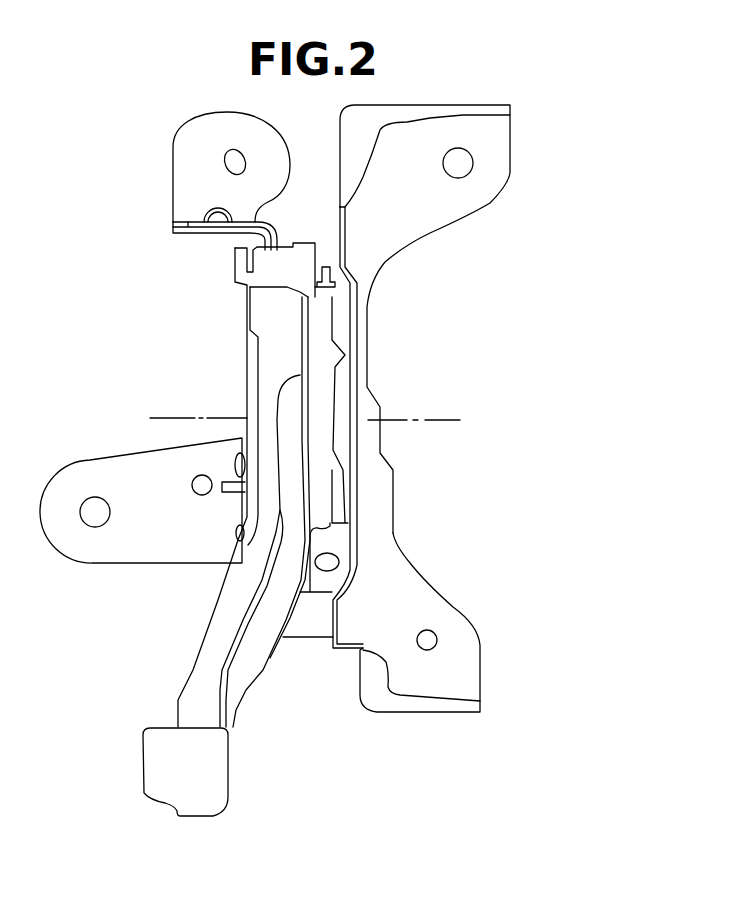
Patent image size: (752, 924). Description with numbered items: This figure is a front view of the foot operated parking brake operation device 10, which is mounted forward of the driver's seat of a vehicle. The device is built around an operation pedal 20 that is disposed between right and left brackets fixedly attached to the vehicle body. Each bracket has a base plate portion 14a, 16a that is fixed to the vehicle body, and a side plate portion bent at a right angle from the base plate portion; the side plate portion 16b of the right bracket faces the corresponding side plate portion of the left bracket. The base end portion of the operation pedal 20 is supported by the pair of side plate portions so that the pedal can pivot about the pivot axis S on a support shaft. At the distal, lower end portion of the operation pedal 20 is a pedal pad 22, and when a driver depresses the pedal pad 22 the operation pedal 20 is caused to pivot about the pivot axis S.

The foot operated parking brake operation device 10 is at (533, 241).
The base plate portion 14a is at (197, 147).
The base plate portion 16a is at (498, 158).
The side plate portion 16b is at (357, 537).
The operation pedal 20 is at (215, 640).
The pedal pad 22 is at (210, 763).
The pivot axis S is at (314, 420).